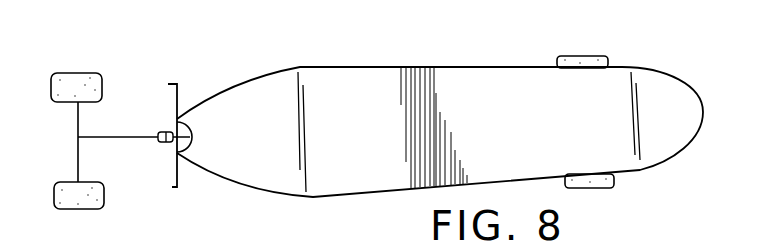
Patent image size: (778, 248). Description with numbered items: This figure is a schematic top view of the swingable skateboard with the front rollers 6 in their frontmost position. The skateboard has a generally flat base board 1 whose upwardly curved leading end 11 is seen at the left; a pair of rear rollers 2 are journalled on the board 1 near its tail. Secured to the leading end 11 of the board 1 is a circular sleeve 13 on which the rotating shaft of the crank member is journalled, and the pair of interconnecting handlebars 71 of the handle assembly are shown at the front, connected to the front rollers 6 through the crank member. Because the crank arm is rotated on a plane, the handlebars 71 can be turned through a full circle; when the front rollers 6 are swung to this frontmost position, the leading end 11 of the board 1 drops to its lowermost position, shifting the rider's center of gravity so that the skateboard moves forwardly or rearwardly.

The base board 1 is at (527, 85).
The rear rollers 2 is at (603, 56).
The front rollers 6 is at (78, 80).
The leading end 11 is at (273, 88).
The circular sleeve 13 is at (165, 143).
The handlebars 71 is at (168, 84).